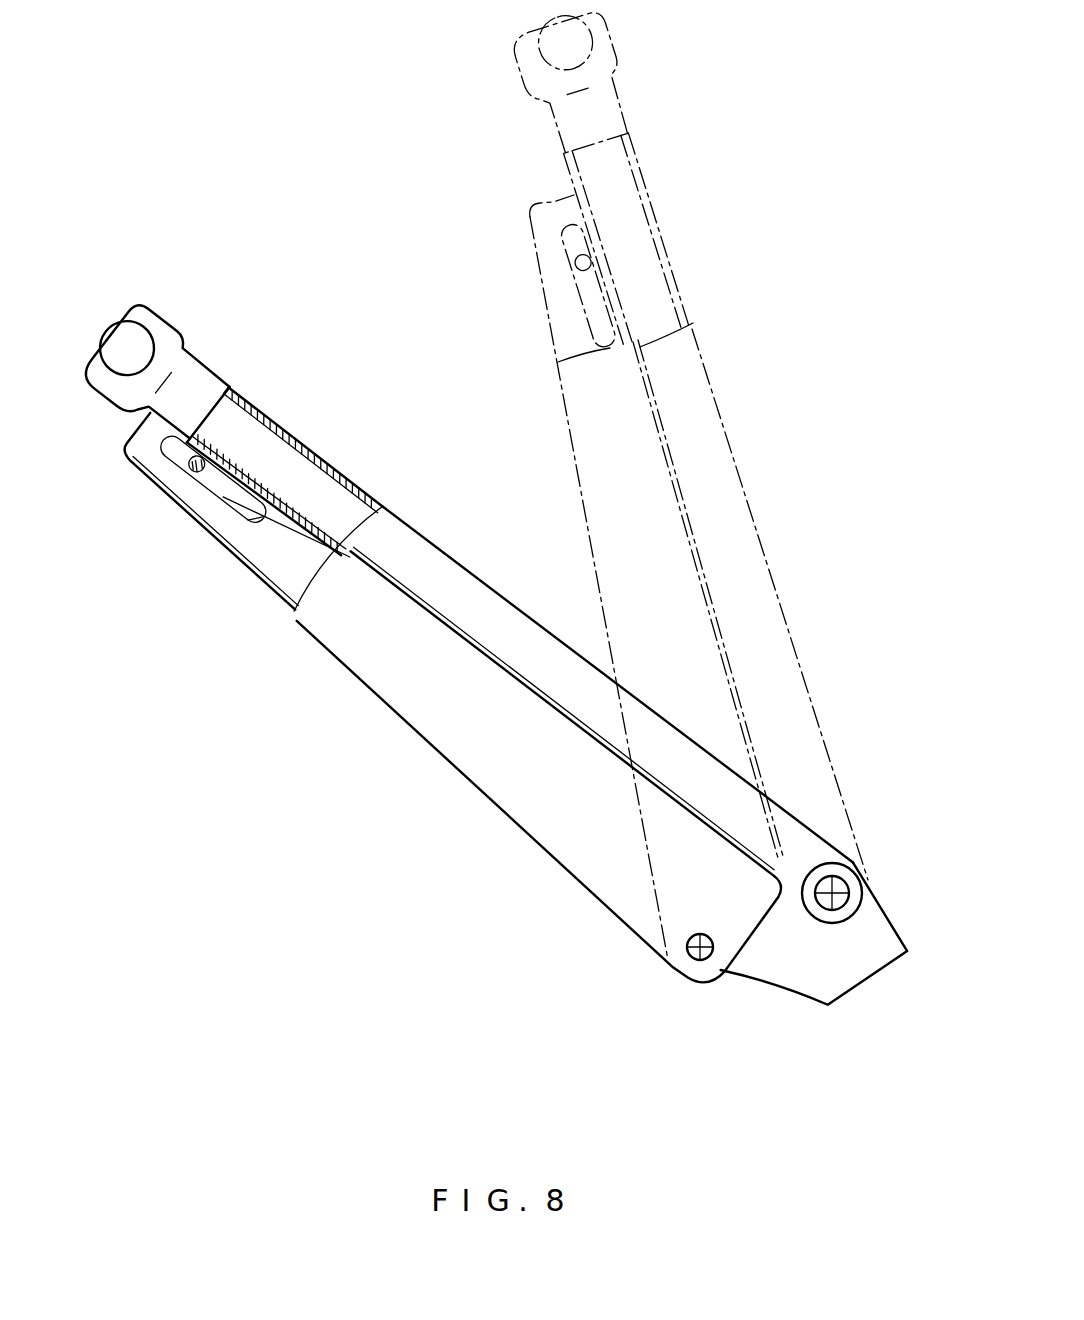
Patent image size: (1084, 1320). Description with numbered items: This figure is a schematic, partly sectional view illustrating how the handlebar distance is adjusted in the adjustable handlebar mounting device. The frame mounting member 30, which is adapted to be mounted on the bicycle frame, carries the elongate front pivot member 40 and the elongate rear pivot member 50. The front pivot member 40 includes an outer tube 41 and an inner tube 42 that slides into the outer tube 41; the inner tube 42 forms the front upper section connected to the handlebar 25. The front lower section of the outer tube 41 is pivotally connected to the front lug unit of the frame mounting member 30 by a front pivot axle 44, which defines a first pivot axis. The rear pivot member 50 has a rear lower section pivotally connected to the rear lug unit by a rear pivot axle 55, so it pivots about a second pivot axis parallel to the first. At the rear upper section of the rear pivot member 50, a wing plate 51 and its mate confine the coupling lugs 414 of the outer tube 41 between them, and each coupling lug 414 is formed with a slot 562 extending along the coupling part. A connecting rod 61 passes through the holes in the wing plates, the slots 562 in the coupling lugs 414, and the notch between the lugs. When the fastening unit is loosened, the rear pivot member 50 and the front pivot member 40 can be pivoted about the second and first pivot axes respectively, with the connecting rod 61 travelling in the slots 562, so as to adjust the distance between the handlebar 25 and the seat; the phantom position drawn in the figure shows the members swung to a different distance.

The handlebar 25 is at (122, 338).
The frame mounting member 30 is at (887, 972).
The front pivot member 40 is at (456, 561).
The outer tube 41 is at (299, 428).
The inner tube 42 is at (259, 400).
The front pivot axle 44 is at (822, 902).
The rear pivot member 50 is at (383, 700).
The wing plate 51 is at (135, 455).
The rear pivot axle 55 is at (694, 960).
The connecting rod 61 is at (180, 478).
The coupling lug 414 is at (287, 537).
The slot 562 is at (226, 505).